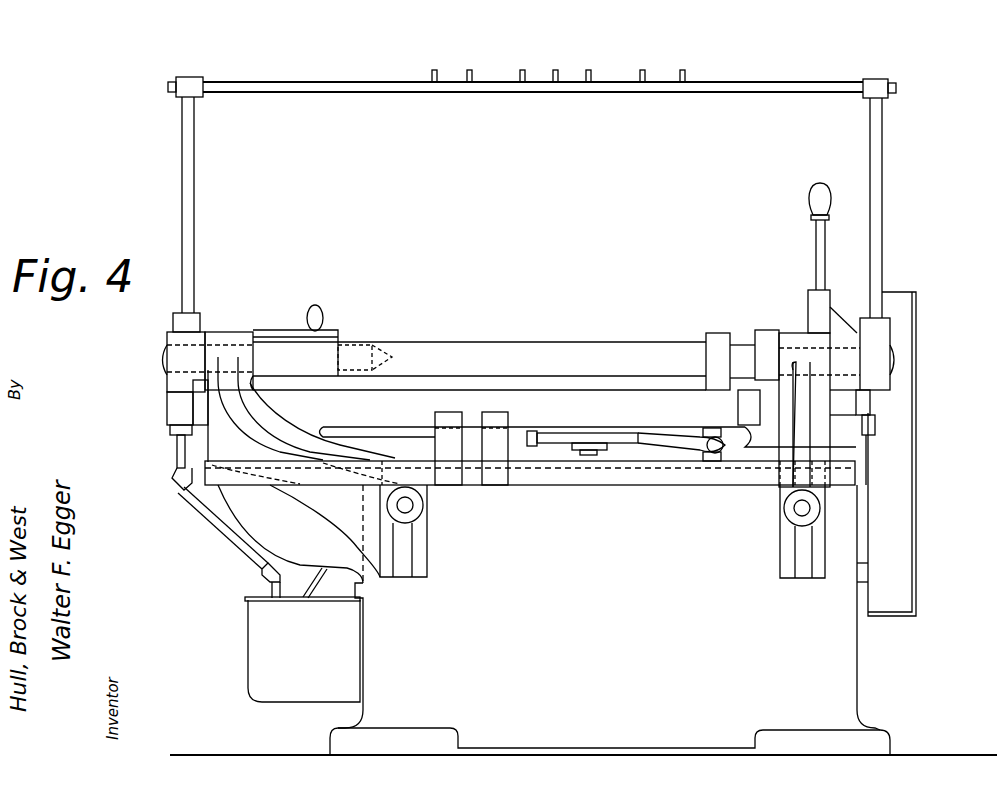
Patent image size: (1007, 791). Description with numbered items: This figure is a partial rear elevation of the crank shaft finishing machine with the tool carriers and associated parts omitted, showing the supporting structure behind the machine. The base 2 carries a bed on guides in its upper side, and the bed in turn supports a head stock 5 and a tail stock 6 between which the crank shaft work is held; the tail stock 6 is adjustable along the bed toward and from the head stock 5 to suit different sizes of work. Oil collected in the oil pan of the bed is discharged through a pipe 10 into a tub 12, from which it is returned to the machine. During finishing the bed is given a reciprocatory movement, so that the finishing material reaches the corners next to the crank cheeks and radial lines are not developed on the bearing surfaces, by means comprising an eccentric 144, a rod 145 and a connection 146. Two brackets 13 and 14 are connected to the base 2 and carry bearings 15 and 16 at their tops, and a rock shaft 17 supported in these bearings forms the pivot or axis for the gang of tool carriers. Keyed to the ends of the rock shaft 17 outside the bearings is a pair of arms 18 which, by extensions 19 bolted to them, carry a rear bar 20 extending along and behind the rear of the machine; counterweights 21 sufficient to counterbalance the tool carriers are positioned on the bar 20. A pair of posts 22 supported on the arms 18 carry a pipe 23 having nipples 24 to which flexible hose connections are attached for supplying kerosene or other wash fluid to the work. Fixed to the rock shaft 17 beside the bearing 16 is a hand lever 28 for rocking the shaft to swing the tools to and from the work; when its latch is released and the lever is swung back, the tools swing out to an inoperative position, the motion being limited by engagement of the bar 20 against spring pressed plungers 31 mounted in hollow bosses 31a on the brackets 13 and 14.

The base 2 is at (623, 523).
The head stock 5 is at (765, 335).
The tail stock 6 is at (285, 330).
The pipe 10 is at (213, 518).
The tub 12 is at (302, 649).
The bracket 13 is at (348, 512).
The bracket 14 is at (782, 493).
The bearing 15 is at (240, 335).
The bearing 16 is at (793, 335).
The rock shaft 17 is at (522, 348).
The arms 18 is at (185, 400).
The extensions 19 is at (205, 447).
The rear bar 20 is at (601, 487).
The counterweights 21 is at (478, 486).
The posts 22 is at (186, 211).
The pipe 23 is at (552, 94).
The nipples 24 is at (556, 70).
The hand lever 28 is at (815, 258).
The spring pressed plungers 31 is at (412, 510).
The hollow bosses 31a is at (415, 520).
The eccentric 144 is at (712, 462).
The rod 145 is at (678, 460).
The connection 146 is at (595, 420).